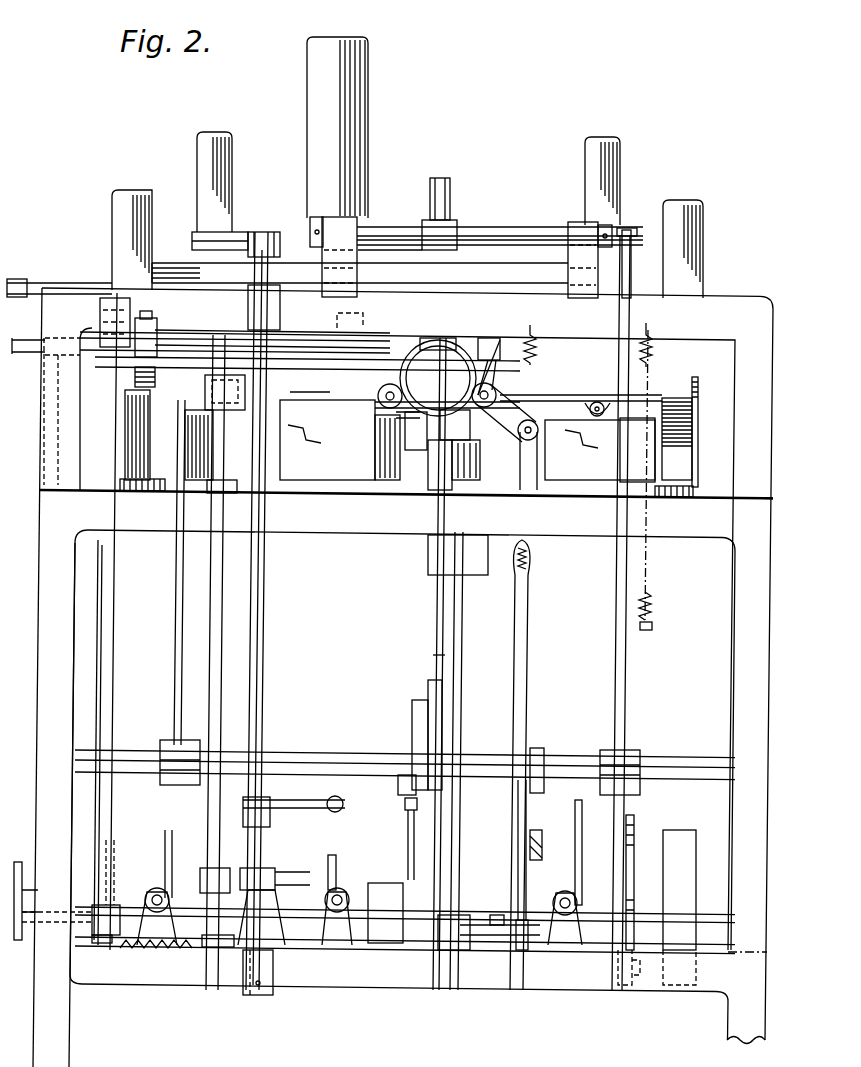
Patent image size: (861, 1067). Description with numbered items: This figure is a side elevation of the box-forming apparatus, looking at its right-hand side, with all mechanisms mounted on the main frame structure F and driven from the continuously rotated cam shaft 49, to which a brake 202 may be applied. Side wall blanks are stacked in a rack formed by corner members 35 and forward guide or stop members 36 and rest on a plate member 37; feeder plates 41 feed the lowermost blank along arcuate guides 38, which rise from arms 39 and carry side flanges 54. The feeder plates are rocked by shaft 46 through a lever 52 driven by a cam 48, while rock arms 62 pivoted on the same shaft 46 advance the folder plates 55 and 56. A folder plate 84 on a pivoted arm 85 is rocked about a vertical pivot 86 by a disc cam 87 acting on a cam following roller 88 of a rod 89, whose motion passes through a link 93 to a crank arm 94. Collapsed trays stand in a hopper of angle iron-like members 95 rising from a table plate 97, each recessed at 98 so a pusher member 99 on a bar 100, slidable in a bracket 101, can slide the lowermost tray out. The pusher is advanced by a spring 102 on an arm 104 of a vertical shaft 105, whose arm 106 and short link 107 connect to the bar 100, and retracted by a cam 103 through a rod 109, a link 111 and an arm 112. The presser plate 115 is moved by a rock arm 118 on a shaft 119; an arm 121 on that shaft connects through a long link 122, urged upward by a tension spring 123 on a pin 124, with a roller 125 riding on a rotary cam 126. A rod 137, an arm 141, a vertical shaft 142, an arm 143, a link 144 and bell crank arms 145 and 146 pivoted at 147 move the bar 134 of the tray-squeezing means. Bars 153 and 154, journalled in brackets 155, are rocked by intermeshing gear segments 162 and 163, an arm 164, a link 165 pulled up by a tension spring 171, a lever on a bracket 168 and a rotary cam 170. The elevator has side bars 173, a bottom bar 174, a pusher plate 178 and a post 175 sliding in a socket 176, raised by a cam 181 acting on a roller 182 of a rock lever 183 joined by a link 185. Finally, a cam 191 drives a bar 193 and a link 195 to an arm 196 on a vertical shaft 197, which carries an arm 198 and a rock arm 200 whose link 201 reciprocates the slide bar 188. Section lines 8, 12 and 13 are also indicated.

The main frame structure F is at (735, 700).
The corner members 35 is at (112, 217).
The forward guide or stop members 36 is at (232, 149).
The angle iron-like members 95 is at (310, 103).
The section line 12- 12 is at (193, 591).
The section line 8- 8 is at (392, 379).
The section line 13- 13 is at (493, 582).
The rock arm 200 is at (236, 234).
The link 201 is at (290, 248).
The shaft 119 is at (475, 242).
The rock arm 118 is at (450, 200).
The presser plate 115 is at (470, 250).
The bar or rod 188 is at (556, 280).
The arm 121 is at (620, 240).
The arm 106 is at (50, 288).
The short link 107 is at (14, 298).
The vertically disposed shaft 197 is at (264, 620).
The recess 98 is at (363, 320).
The pivot 147 is at (152, 318).
The pusher member 99 is at (242, 340).
The table plate 97 is at (330, 392).
The bell crank arm 146 is at (298, 394).
The bar or rod 100 is at (28, 354).
The supporting bracket 101 is at (80, 375).
The bell crank arm 145 is at (135, 384).
The link 144 is at (207, 386).
The arm 143 is at (232, 418).
The arcuate guides 38 is at (142, 440).
The side flanges or guides 54 is at (697, 400).
The arms 39 is at (170, 500).
The bar 134 is at (437, 333).
The lugs or brackets 155 is at (390, 334).
The gear segment 162 is at (489, 356).
The gear segment 163 is at (388, 380).
The bar or rod 153 is at (497, 386).
The arm 164 is at (508, 424).
The plate member 37 is at (549, 395).
The feeder plates 41 is at (612, 395).
The tension spring 171 is at (537, 352).
The bar or rod 154 is at (385, 405).
The pusher plate 178 is at (377, 420).
The folder plate 84 is at (375, 450).
The pivoted arm 85 is at (386, 460).
The vertical pivot shaft 86 is at (470, 476).
The folder plate 56 is at (315, 476).
The side or end bars 173 is at (420, 495).
The folder plate 55 is at (587, 484).
The vertically disposed shaft 105 is at (114, 607).
The arm 141 is at (180, 640).
The vertically extending shaft 142 is at (212, 675).
The shaft 46 is at (138, 752).
The rock arms 62 is at (358, 647).
The link 165 is at (513, 683).
The bottom bar 174 is at (430, 657).
The link 185 is at (414, 710).
The post 175 is at (416, 723).
The rock lever 183 is at (404, 776).
The roller 182 is at (404, 800).
The cam 181 is at (410, 818).
The cam 191 is at (338, 865).
The bar 193 is at (343, 892).
The arm 196 is at (290, 877).
The arm 198 is at (300, 809).
The link 195 is at (310, 922).
The lever 52 is at (95, 806).
The cam 103 is at (175, 835).
The cam 48 is at (112, 855).
The arm 104 is at (142, 898).
The cam shaft 49 is at (88, 880).
The link 111 is at (82, 905).
The arm 112 is at (84, 922).
The rod 109 is at (150, 946).
The spring 102 is at (188, 940).
The rod 137 is at (232, 948).
The tension spring 123 is at (652, 600).
The pin 124 is at (652, 627).
The long link 122 is at (630, 648).
The bracket 168 is at (542, 833).
The disc cam 87 is at (582, 843).
The rotary cam 126 is at (634, 852).
The brake 202 is at (685, 830).
The rotary cam 170 is at (517, 878).
The rod 89 is at (562, 890).
The cam following roller 88 is at (588, 888).
The socket 176 is at (446, 945).
The crank arm 94 is at (485, 945).
The link 93 is at (538, 945).
The roller 125 is at (632, 986).